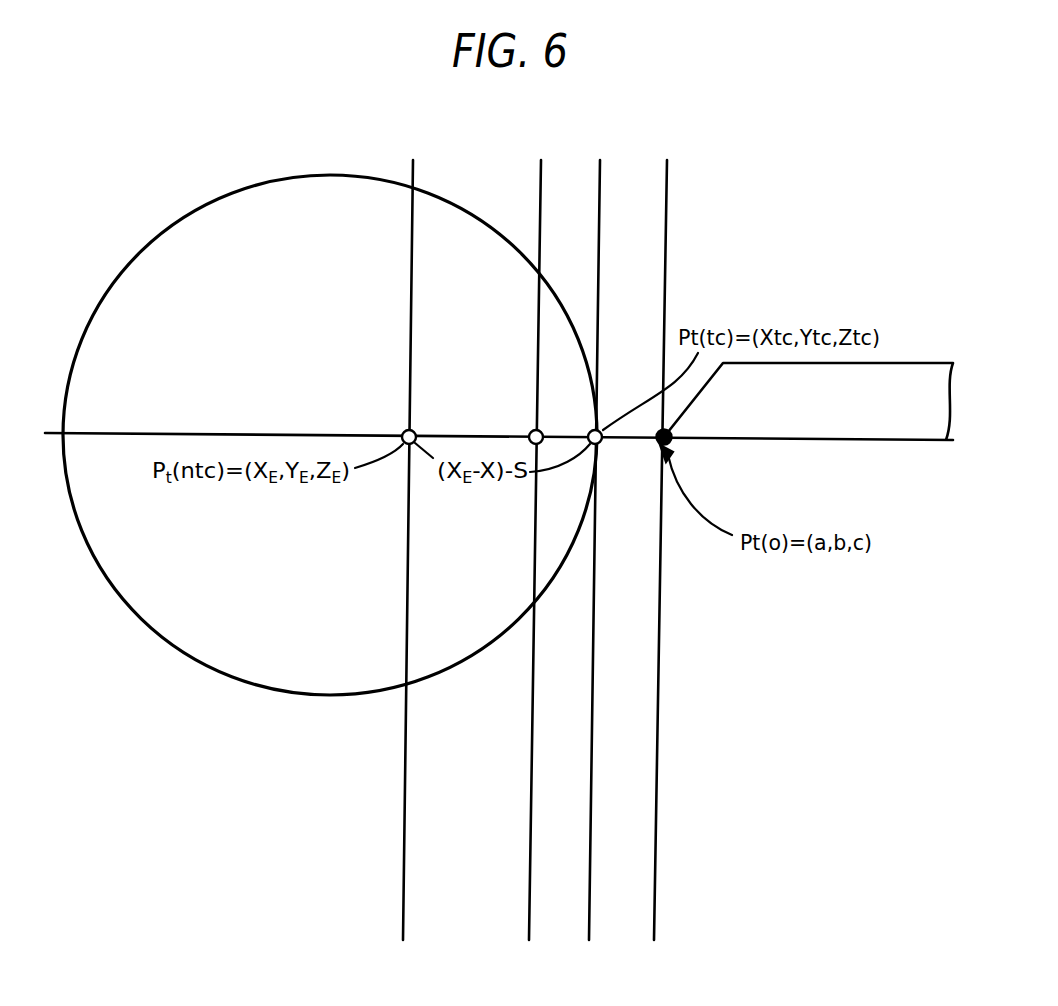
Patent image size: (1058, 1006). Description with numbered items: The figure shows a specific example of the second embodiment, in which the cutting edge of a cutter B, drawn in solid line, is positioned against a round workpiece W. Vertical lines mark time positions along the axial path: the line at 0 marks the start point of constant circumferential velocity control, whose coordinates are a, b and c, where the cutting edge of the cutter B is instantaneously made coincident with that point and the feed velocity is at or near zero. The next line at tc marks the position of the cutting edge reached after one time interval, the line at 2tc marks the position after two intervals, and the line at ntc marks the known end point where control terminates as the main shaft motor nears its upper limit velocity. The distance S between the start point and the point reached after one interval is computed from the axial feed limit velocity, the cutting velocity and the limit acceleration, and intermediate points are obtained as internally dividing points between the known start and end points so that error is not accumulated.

The workpiece W is at (143, 253).
The cutter B is at (858, 441).
The distance from the start point S is at (660, 445).
The end time of constant circumferential velocity control ntc is at (401, 568).
The time 2tc is at (525, 568).
The time interval tc is at (589, 568).
The time 0 is at (657, 568).